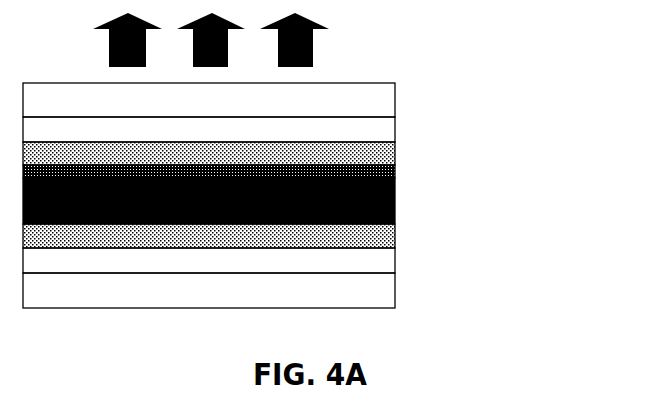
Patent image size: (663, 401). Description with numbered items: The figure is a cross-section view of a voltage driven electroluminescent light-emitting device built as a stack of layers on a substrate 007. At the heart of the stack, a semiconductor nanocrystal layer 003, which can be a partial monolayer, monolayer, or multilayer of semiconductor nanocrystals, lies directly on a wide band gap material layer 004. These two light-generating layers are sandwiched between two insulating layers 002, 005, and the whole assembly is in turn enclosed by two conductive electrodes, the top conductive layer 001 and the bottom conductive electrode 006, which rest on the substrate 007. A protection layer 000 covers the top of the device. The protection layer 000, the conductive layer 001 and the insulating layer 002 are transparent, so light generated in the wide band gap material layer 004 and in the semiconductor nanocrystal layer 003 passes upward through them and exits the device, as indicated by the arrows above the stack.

The protection layer 000 is at (255, 100).
The conductive layer 001 is at (285, 129).
The insulating layer 002 is at (268, 153).
The semiconductor nanocrystal layer 003 is at (302, 175).
The wide band gap material layer 004 is at (328, 201).
The insulating layer 005 is at (268, 236).
The conductive electrode 006 is at (300, 262).
The substrate 007 is at (270, 290).